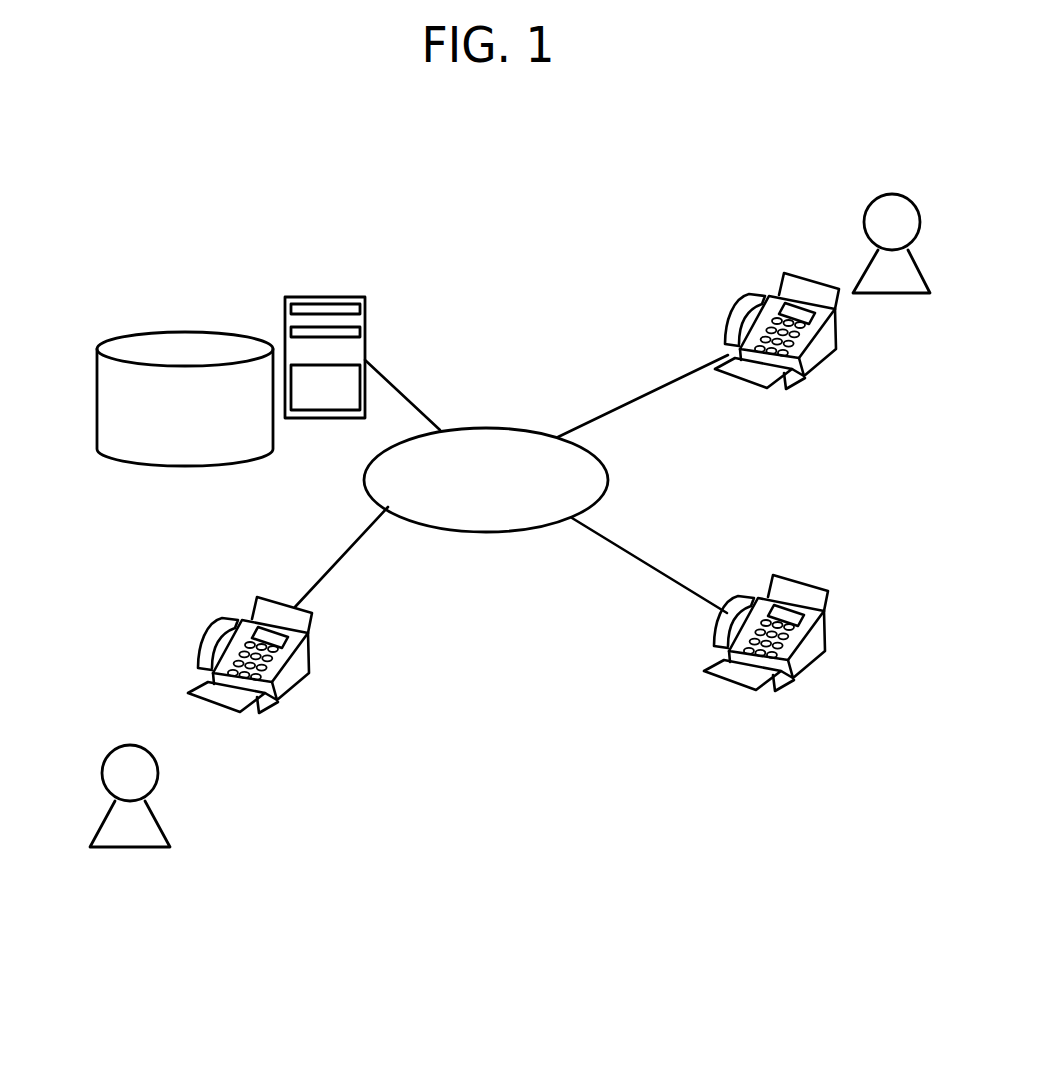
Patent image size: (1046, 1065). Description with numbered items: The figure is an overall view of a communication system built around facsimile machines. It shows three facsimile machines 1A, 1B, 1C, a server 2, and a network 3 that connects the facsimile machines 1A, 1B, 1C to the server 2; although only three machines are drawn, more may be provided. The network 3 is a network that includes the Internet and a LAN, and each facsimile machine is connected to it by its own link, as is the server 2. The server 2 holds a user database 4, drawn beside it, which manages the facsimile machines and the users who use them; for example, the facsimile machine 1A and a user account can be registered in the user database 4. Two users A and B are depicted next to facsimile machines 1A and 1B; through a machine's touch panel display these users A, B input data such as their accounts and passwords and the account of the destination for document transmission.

The facsimile machine 1A is at (310, 660).
The facsimile machine 1B is at (772, 294).
The facsimile machine 1C is at (822, 657).
The server 2 is at (366, 316).
The network 3 is at (486, 480).
The user database 4 is at (142, 332).
The user A is at (138, 847).
The user B is at (895, 293).